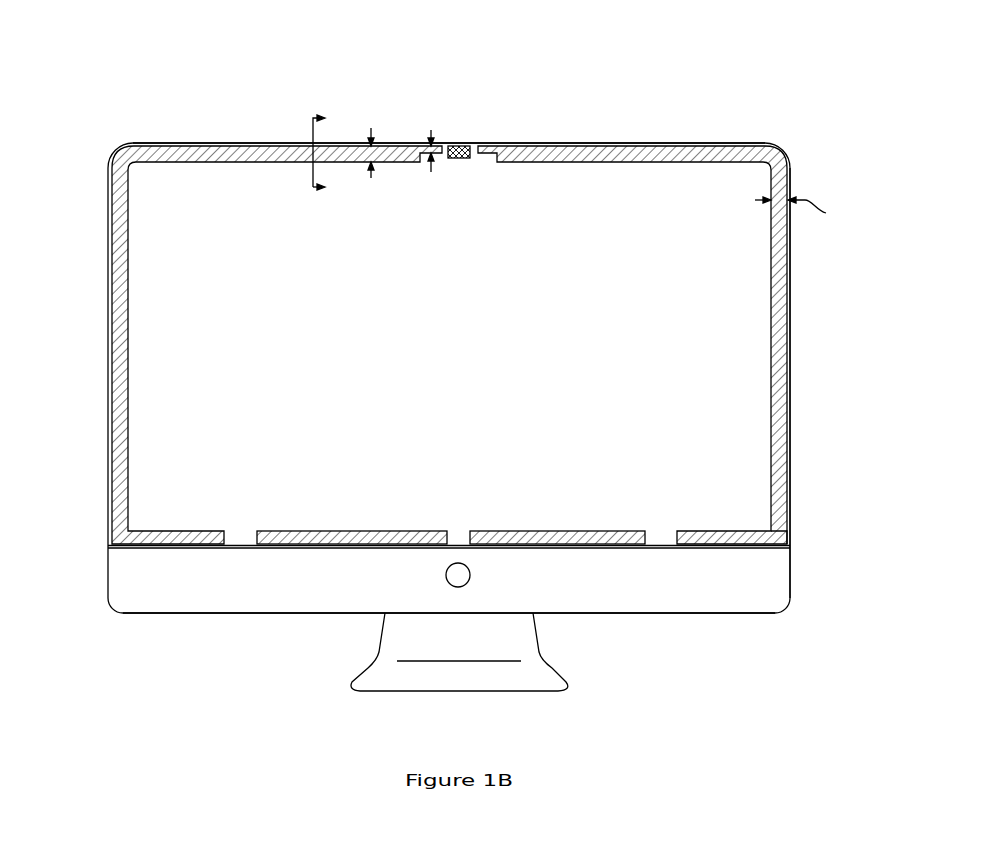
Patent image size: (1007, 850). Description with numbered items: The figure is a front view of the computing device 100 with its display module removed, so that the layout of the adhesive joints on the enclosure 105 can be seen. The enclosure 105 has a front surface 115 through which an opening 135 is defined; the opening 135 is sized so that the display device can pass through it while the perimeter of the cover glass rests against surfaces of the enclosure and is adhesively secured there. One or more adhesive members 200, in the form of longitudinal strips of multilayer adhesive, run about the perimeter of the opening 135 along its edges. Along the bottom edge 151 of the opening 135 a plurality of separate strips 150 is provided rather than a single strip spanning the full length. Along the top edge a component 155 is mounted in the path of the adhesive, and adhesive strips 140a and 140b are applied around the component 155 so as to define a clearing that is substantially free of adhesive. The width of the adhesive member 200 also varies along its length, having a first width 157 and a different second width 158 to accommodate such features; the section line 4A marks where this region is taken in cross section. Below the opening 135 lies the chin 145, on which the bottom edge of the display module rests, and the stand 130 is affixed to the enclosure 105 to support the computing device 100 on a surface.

The computing device 100 is at (757, 62).
The enclosure 105 is at (790, 357).
The front surface 115 is at (280, 603).
The stand 130 is at (530, 640).
The opening 135 is at (92, 121).
The adhesive strip 140a is at (236, 140).
The adhesive strip 140b is at (597, 140).
The chin 145 is at (690, 598).
The strips 150 is at (295, 535).
The bottom edge 151 is at (783, 541).
The component 155 is at (459, 153).
The first width 157 is at (376, 128).
The second width 158 is at (436, 130).
The adhesive member 200 is at (674, 146).
The section line 4A is at (330, 153).